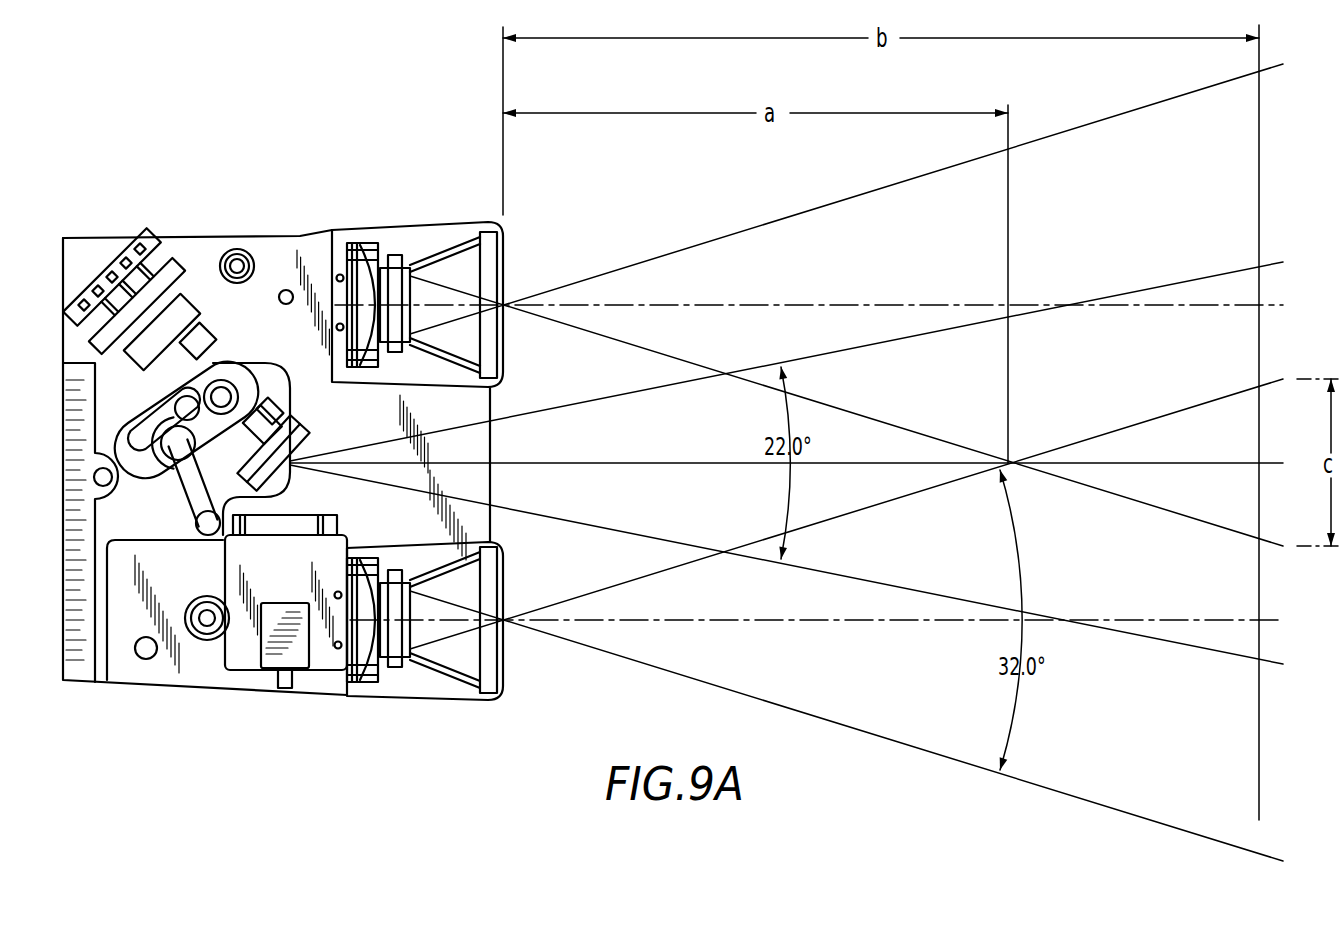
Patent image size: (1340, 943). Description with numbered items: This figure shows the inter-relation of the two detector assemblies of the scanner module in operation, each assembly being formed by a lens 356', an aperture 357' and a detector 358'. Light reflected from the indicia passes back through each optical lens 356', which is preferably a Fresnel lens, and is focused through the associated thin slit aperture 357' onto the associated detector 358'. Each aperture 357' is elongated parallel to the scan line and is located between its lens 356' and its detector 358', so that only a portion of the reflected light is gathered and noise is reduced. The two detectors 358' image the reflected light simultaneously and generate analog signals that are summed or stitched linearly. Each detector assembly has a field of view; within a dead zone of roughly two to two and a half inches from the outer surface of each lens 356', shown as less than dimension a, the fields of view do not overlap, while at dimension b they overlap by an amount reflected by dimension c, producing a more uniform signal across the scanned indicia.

The optical lens 356' is at (453, 464).
The aperture 357' is at (412, 422).
The detector 358' is at (391, 471).